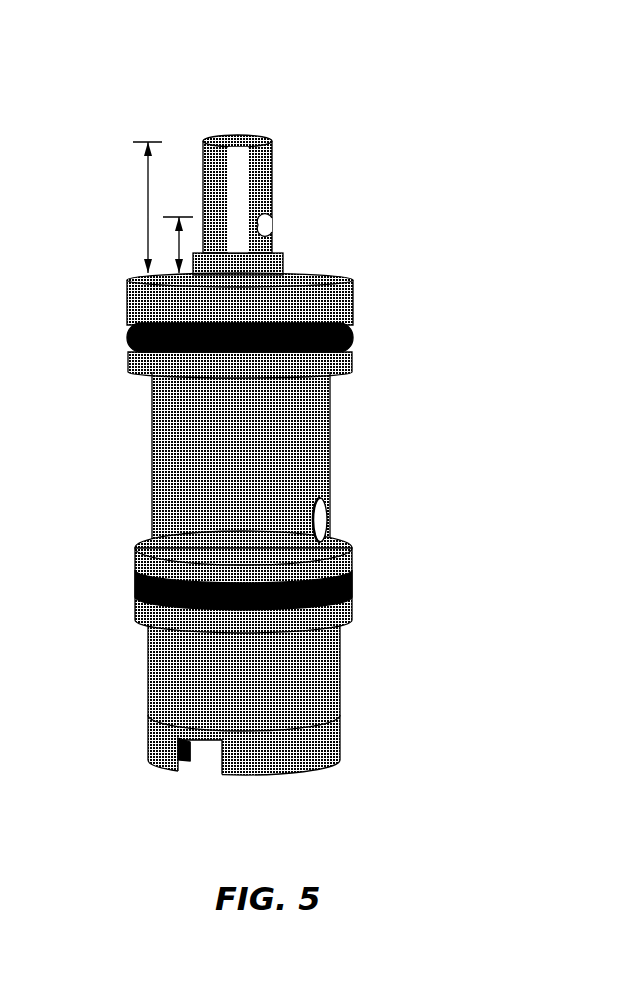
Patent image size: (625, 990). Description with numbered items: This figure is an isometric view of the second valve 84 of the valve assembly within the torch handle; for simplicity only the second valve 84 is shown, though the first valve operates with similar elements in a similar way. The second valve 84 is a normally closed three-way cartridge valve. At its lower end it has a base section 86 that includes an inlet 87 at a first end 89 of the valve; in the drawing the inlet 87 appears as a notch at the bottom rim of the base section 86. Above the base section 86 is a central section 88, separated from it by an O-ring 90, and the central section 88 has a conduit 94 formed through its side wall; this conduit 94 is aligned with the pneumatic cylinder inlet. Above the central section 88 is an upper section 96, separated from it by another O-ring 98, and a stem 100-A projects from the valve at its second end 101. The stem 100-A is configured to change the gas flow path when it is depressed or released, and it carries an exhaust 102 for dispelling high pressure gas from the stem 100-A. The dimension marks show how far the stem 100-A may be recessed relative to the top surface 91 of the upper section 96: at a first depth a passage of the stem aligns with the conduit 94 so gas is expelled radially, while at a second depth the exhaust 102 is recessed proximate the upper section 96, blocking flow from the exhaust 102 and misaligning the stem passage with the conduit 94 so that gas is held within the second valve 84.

The second valve 84 is at (203, 85).
The stem 100-A is at (272, 156).
The second end 101 is at (373, 155).
The exhaust 102 is at (271, 228).
The top surface 91 is at (320, 274).
The upper section 96 is at (127, 292).
The O-ring 98 is at (128, 338).
The central section 88 is at (158, 446).
The conduit 94 is at (327, 517).
The O-ring 90 is at (137, 572).
The base section 86 is at (152, 665).
The inlet 87 is at (207, 762).
The first end 89 is at (375, 727).